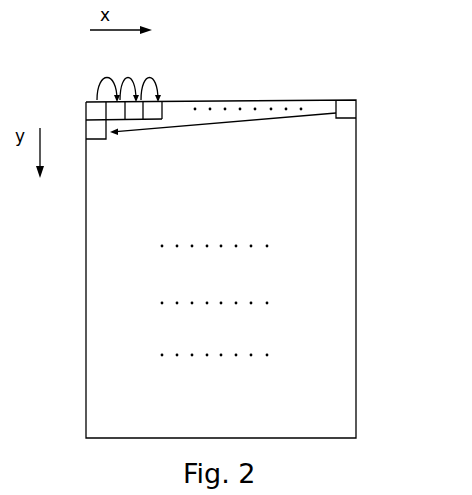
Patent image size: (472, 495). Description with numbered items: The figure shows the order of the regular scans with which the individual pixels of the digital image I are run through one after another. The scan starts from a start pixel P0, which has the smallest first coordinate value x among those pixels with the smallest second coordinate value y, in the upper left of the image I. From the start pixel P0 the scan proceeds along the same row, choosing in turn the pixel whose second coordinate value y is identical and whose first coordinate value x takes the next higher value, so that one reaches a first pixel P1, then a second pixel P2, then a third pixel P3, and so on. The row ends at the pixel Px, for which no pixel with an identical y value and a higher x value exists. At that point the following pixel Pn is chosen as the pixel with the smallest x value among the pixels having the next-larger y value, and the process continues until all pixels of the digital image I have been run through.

The digital image I is at (338, 372).
The start pixel P0 is at (93, 101).
The first pixel P1 is at (114, 99).
The second pixel P2 is at (135, 118).
The third pixel P3 is at (159, 118).
The following pixel Pn is at (97, 138).
The last pixel of a row Px is at (343, 103).